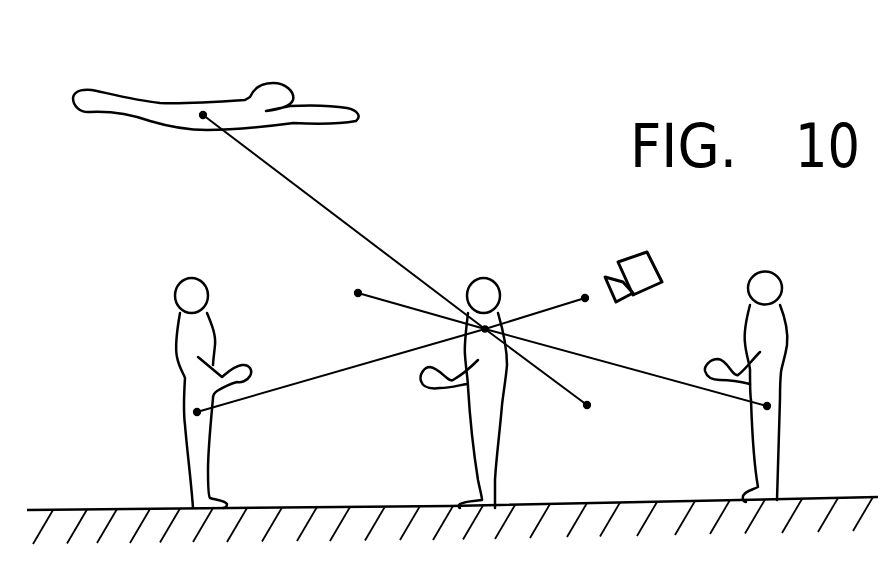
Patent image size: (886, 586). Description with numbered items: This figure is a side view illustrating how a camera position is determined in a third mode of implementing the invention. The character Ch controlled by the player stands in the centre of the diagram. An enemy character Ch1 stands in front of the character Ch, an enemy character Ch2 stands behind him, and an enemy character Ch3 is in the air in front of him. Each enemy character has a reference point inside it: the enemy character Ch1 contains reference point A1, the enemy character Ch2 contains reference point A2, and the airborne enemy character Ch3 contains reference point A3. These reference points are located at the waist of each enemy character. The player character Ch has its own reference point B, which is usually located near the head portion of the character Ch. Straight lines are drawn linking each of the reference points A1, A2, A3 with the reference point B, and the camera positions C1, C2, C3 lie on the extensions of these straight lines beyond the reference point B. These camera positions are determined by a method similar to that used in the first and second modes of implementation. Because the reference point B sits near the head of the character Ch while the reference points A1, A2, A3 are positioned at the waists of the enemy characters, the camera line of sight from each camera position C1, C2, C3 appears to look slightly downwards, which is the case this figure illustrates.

The enemy character Ch3 is at (253, 94).
The reference point A3 is at (203, 117).
The enemy character Ch1 is at (208, 451).
The reference point A1 is at (195, 412).
The character Ch is at (497, 443).
The enemy character Ch2 is at (762, 456).
The reference point A2 is at (769, 404).
The camera position C1 is at (585, 300).
The camera position C2 is at (333, 283).
The camera position C3 is at (608, 408).
The reference point B is at (490, 327).